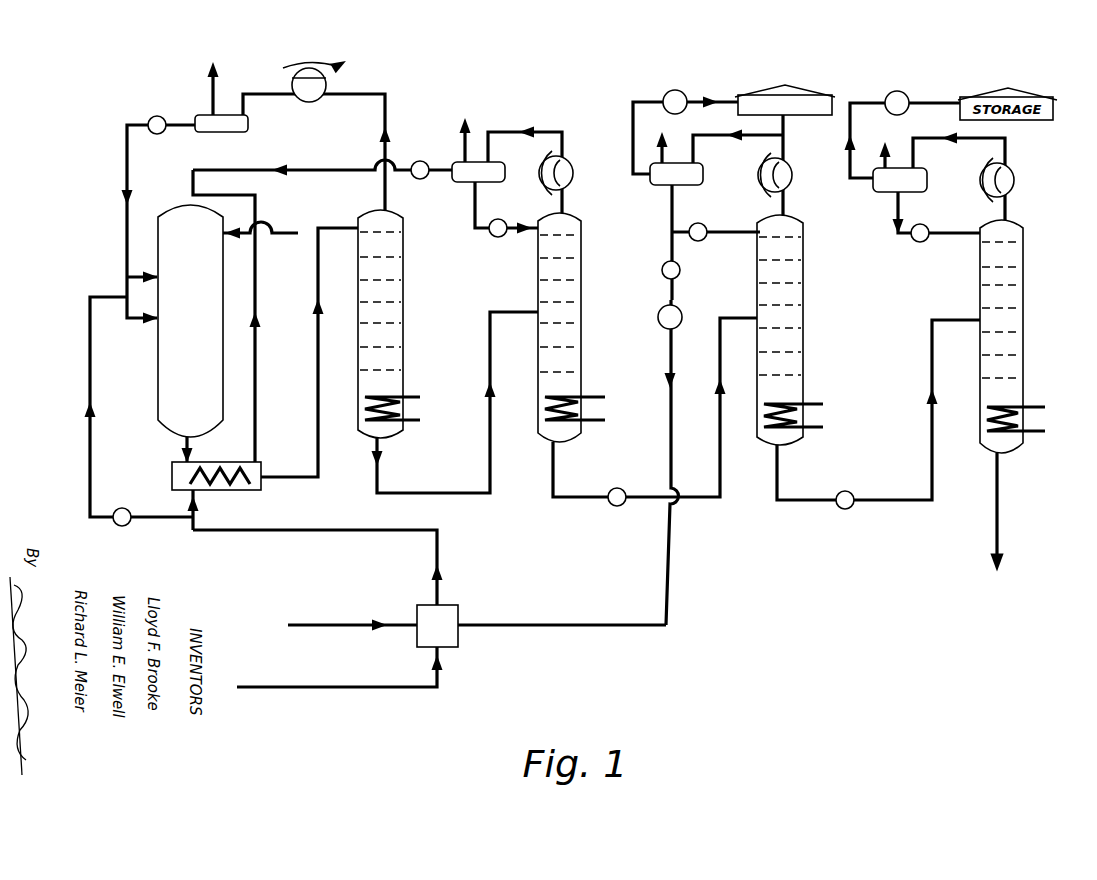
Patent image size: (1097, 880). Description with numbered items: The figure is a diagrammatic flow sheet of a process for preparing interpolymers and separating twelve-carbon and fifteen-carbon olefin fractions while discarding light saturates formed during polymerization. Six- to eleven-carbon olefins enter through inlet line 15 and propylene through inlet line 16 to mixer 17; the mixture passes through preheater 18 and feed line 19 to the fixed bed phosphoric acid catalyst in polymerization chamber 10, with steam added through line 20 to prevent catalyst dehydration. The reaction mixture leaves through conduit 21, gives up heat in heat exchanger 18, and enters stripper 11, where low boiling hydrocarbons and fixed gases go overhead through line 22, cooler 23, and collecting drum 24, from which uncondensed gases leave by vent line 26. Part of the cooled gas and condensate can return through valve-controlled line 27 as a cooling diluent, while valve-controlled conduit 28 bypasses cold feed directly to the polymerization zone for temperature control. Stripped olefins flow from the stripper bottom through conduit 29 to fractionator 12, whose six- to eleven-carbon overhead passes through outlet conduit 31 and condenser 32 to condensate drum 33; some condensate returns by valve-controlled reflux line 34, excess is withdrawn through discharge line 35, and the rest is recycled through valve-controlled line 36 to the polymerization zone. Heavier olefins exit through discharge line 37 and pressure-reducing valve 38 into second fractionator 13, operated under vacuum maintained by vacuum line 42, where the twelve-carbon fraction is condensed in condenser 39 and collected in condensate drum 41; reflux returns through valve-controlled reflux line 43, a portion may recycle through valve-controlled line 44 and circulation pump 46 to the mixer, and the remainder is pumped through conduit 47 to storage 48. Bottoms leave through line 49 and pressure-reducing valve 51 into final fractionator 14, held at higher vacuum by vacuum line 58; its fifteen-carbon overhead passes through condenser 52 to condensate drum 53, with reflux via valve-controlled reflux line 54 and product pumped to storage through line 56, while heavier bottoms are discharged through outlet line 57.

The polymerization chamber 10 is at (158, 403).
The stripper 11 is at (405, 320).
The fractionator 12 is at (582, 320).
The second fractionator 13 is at (805, 322).
The final fractionator 14 is at (1025, 262).
The inlet line 15 is at (445, 655).
The inlet line 16 is at (403, 628).
The mixer 17 is at (460, 617).
The preheater 18 is at (222, 491).
The feed line 19 is at (257, 378).
The line 20 is at (275, 237).
The conduit 21 is at (184, 459).
The line 22 is at (380, 108).
The cooler 23 is at (330, 90).
The collecting drum 24 is at (249, 126).
The vent line 26 is at (211, 99).
The valve-controlled line 27 is at (126, 185).
The valve-controlled conduit 28 is at (88, 420).
The conduit 29 is at (451, 493).
The outlet conduit 31 is at (550, 130).
The condenser 32 is at (575, 170).
The condensate drum 33 is at (463, 183).
The valve-controlled reflux line 34 is at (474, 232).
The discharge line 35 is at (459, 149).
The valve-controlled line 36 is at (348, 172).
The discharge line 37 is at (613, 492).
The pressure-reducing valve 38 is at (610, 505).
The condenser 39 is at (794, 176).
The condensate drum 41 is at (661, 188).
The vacuum line 42 is at (655, 158).
The valve-controlled reflux line 43 is at (712, 236).
The valve-controlled line 44 is at (669, 294).
The circulation pump 46 is at (665, 330).
The conduit 47 is at (661, 96).
The storage 48 is at (790, 116).
The line 49 is at (836, 496).
The pressure-reducing valve 51 is at (834, 507).
The condenser 52 is at (1017, 187).
The condensate drum 53 is at (882, 195).
The valve-controlled reflux line 54 is at (912, 239).
The line 56 is at (878, 100).
The outlet line 57 is at (1000, 478).
The vacuum line 58 is at (875, 162).